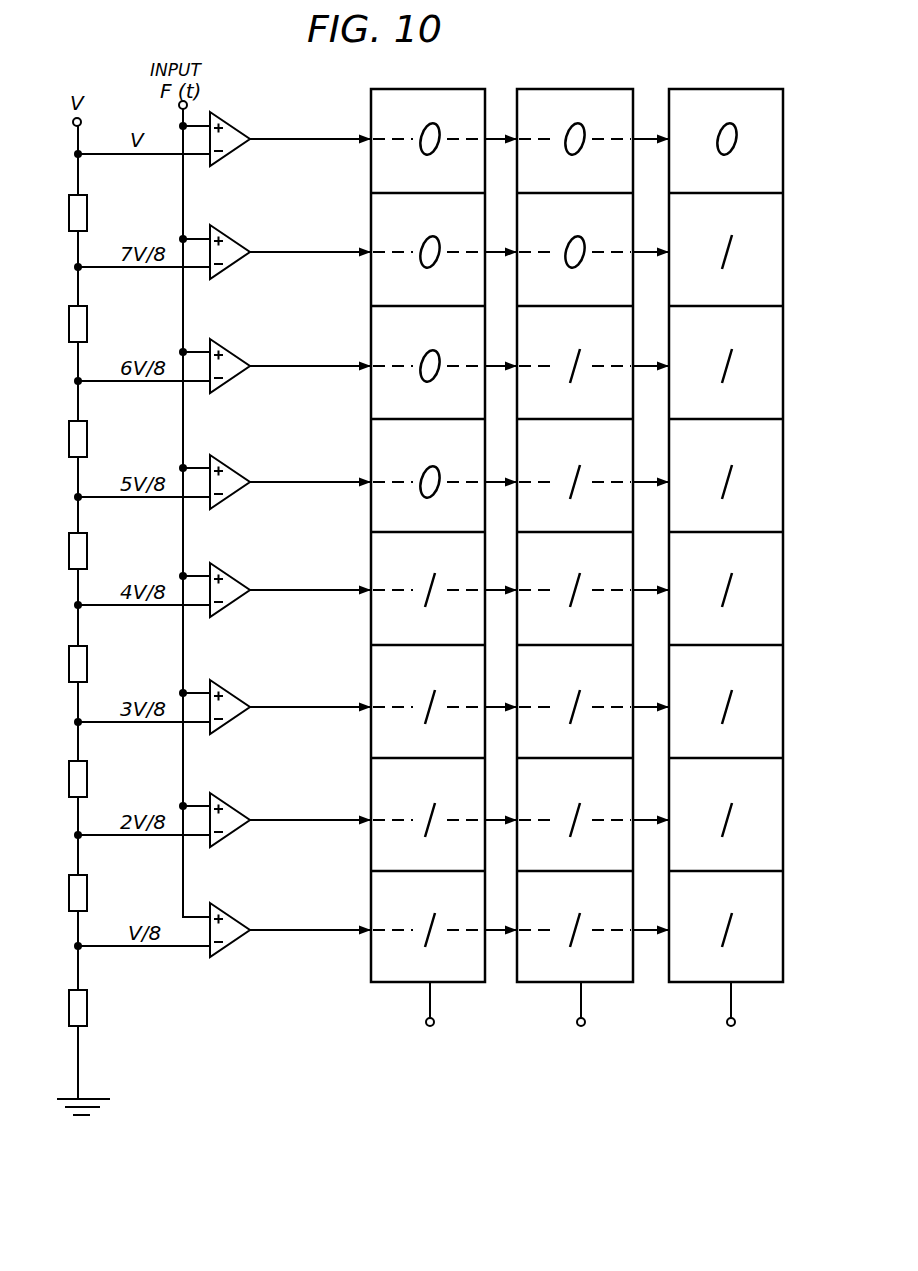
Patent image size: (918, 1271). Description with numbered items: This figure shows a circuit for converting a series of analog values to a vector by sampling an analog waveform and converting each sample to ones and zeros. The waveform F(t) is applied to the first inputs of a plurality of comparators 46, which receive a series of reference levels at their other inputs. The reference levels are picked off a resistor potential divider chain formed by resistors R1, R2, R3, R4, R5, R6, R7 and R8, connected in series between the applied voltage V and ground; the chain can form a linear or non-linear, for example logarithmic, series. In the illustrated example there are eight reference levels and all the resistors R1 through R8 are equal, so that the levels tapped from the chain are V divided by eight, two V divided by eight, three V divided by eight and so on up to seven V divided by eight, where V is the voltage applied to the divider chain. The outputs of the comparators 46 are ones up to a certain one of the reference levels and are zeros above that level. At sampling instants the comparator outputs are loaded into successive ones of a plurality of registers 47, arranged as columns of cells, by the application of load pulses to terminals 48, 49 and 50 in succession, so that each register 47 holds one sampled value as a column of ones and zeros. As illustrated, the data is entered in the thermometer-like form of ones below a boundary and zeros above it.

The comparators 46 is at (222, 166).
The registers 47 is at (525, 982).
The terminal 48 is at (423, 1021).
The terminal 49 is at (577, 1021).
The terminal 50 is at (728, 1021).
The resistor R1 is at (93, 1008).
The resistor R2 is at (93, 893).
The resistor R3 is at (93, 779).
The resistor R4 is at (93, 664).
The resistor R5 is at (93, 551).
The resistor R6 is at (93, 439).
The resistor R7 is at (93, 324).
The resistor R8 is at (93, 213).